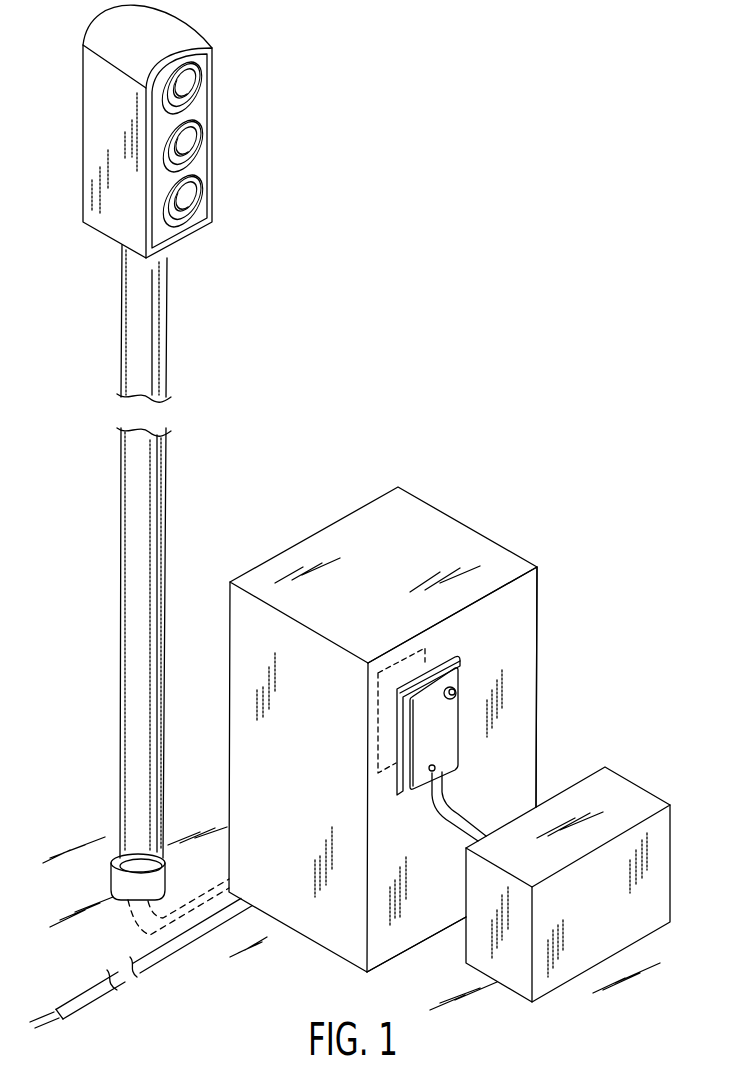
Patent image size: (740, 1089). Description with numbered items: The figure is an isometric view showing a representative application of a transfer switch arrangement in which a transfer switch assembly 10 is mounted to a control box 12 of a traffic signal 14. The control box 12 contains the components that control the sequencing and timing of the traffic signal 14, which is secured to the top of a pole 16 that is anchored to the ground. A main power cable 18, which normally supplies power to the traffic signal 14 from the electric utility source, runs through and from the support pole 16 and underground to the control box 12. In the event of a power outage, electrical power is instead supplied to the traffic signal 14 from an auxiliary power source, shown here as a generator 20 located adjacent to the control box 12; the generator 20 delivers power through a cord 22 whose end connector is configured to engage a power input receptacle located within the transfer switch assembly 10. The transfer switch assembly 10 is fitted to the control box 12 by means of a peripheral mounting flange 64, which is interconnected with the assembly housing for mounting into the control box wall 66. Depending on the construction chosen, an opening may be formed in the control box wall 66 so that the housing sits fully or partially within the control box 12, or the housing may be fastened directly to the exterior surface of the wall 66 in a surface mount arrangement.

The transfer switch assembly 10 is at (472, 680).
The control box 12 is at (432, 531).
The traffic signal 14 is at (177, 28).
The pole 16 is at (141, 521).
The main power cable 18 is at (84, 1000).
The generator 20 is at (670, 853).
The cord 22 is at (456, 812).
The peripheral mounting flange 64 is at (450, 652).
The control box wall 66 is at (522, 708).